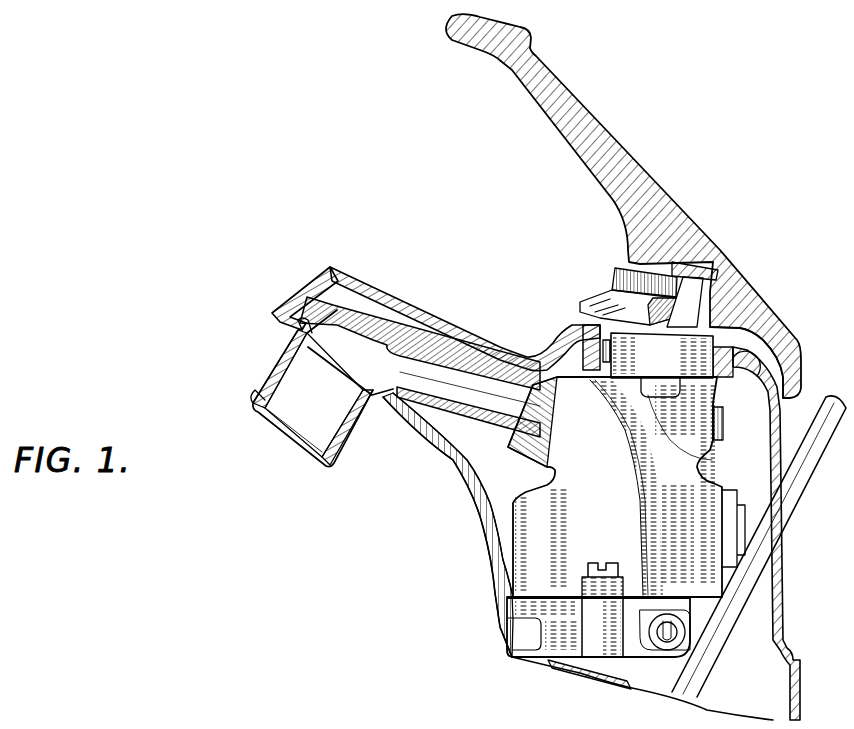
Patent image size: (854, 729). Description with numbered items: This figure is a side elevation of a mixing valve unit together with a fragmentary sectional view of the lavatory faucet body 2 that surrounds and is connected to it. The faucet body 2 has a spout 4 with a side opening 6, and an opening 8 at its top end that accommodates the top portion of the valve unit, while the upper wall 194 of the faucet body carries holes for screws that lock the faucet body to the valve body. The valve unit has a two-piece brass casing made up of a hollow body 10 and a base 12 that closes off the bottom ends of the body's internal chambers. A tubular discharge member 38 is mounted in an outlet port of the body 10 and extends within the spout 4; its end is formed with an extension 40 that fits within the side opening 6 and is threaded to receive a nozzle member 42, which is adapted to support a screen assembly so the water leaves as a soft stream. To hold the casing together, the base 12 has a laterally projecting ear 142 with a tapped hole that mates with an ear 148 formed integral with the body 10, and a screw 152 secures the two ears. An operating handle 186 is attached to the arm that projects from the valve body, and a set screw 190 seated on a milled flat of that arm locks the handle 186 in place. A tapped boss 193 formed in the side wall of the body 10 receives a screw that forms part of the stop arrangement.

The lavatory faucet body 2 is at (470, 528).
The spout 4 is at (424, 308).
The side opening 6 is at (270, 367).
The opening 8 is at (578, 328).
The body 10 is at (512, 468).
The base 12 is at (524, 640).
The tubular discharge member 38 is at (464, 358).
The extension 40 is at (302, 332).
The nozzle member 42 is at (256, 390).
The laterally projecting ear 142 is at (630, 570).
The ear 148 is at (596, 648).
The screw 152 is at (610, 562).
The operating handle 186 is at (582, 153).
The set screw 190 is at (620, 266).
The tapped boss 193 is at (715, 440).
The upper wall 194 is at (760, 308).